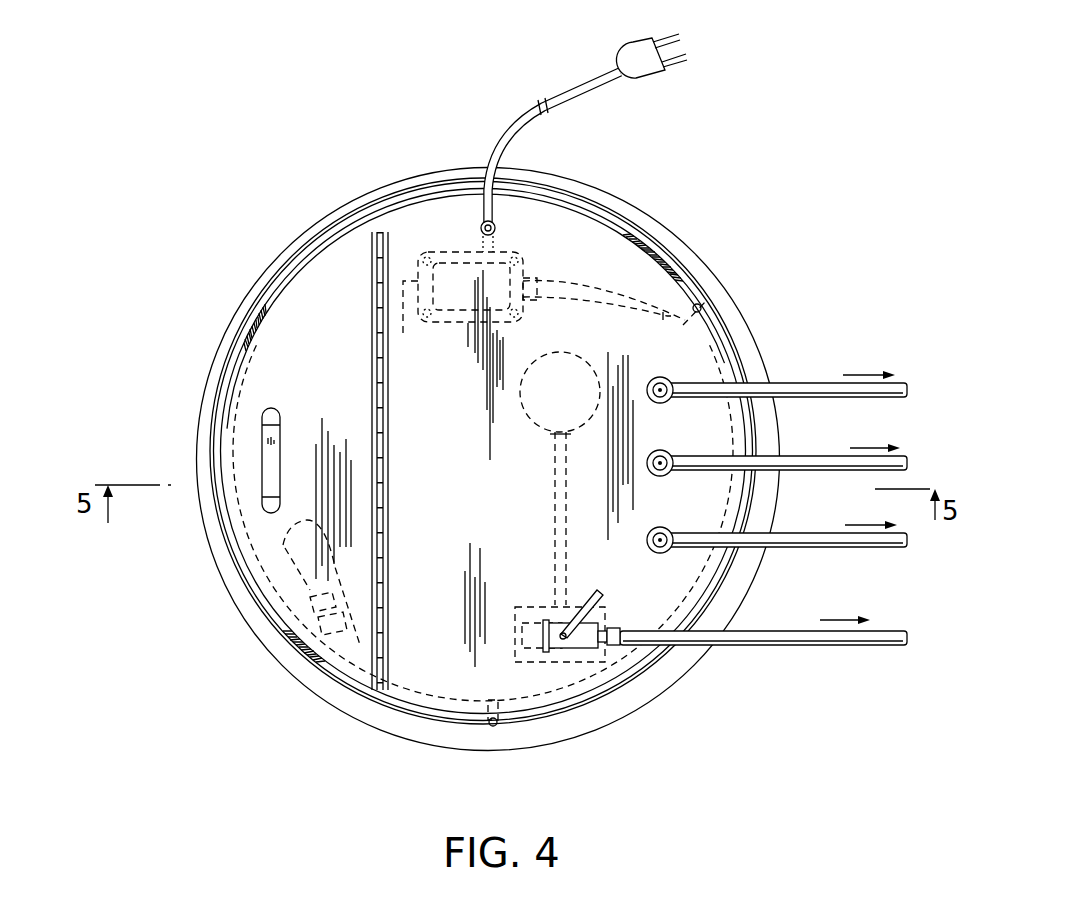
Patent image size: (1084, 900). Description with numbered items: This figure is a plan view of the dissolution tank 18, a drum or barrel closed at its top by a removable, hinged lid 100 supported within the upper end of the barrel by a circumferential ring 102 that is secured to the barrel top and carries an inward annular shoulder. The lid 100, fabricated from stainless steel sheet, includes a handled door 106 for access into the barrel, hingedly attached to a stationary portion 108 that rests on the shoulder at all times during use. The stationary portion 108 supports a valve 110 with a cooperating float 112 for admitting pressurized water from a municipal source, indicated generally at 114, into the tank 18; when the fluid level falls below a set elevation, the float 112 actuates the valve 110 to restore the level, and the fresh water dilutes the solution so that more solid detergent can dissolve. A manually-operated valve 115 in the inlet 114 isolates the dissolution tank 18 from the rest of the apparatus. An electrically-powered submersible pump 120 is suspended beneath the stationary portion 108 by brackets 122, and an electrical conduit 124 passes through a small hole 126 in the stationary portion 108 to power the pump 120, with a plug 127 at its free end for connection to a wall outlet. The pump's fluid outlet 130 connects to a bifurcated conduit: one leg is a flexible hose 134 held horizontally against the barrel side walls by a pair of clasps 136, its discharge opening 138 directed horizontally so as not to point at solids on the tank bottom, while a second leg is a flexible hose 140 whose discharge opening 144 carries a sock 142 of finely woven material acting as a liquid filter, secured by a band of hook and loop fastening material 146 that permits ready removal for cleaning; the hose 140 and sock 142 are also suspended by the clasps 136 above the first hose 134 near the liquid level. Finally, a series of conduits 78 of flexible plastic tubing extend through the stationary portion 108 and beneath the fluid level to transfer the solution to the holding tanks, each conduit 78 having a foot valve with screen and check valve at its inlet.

The dissolution tank 18 is at (298, 198).
The lid 100 is at (335, 307).
The circumferential ring 102 is at (232, 318).
The handled door 106 is at (334, 400).
The stationary portion 108 is at (489, 513).
The valve 110 is at (543, 665).
The float 112 is at (531, 412).
The municipal water source inlet 114 is at (795, 645).
The manually-operated valve 115 is at (596, 613).
The submersible pump 120 is at (452, 322).
The brackets 122 is at (572, 268).
The electrical conduit 124 is at (520, 127).
The hole 126 is at (500, 228).
The plug 127 is at (653, 72).
The fluid outlet 130 is at (539, 302).
The flexible hose 134 is at (665, 318).
The clasps 136 is at (700, 324).
The discharge opening 138 is at (337, 667).
The flexible hose 140 is at (406, 690).
The sock 142 is at (283, 545).
The discharge opening 144 is at (317, 600).
The band of hook and loop fastening material 146 is at (307, 626).
The conduits 78 is at (808, 397).